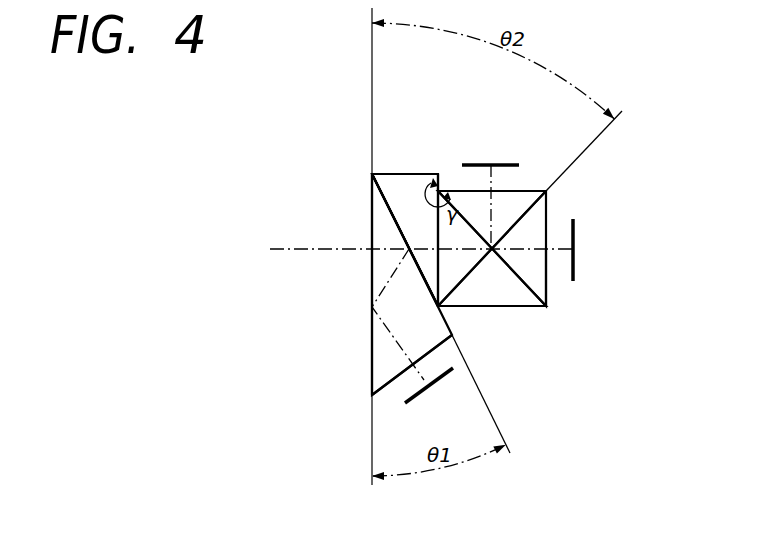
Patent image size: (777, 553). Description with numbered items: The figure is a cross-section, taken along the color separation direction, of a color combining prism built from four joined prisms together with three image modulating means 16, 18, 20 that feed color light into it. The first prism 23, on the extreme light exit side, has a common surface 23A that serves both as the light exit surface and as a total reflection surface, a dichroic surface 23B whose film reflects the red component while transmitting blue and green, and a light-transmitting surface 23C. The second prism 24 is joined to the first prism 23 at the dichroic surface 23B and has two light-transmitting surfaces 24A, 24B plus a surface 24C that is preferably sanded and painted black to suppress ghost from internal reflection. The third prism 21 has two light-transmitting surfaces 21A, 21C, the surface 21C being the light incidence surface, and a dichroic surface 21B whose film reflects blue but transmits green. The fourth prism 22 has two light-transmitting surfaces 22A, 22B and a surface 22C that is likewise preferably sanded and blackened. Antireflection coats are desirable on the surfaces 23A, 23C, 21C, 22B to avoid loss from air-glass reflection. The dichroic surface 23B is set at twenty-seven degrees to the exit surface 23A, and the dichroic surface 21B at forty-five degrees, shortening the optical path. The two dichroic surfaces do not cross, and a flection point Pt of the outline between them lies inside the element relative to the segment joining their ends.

The image modulating means 16 is at (478, 164).
The image modulating means 18 is at (575, 263).
The image modulating means 20 is at (418, 393).
The third prism 21 is at (522, 191).
The light-transmitting surface 21A is at (422, 130).
The dichroic surface 21B is at (547, 215).
The light-transmitting surface 21C is at (544, 191).
The fourth prism 22 is at (532, 308).
The light-transmitting surface 22A is at (562, 248).
The light-transmitting surface 22B is at (547, 291).
The surface 22C is at (500, 308).
The first prism 23 is at (372, 362).
The common surface 23A is at (372, 283).
The dichroic surface 23B is at (393, 217).
The light-transmitting surface 23C is at (437, 345).
The second prism 24 is at (398, 173).
The light-transmitting surface 24A is at (348, 233).
The light-transmitting surface 24B is at (410, 173).
The surface 24C is at (383, 173).
The flection point Pt is at (434, 184).